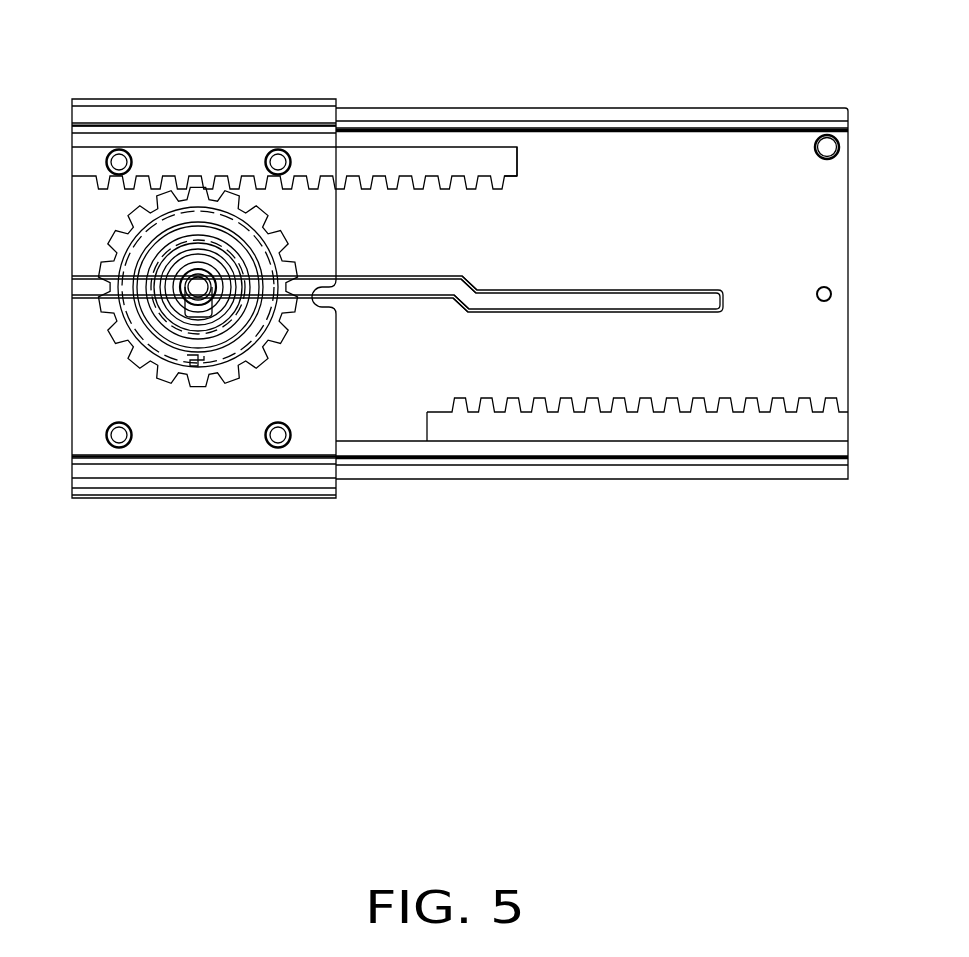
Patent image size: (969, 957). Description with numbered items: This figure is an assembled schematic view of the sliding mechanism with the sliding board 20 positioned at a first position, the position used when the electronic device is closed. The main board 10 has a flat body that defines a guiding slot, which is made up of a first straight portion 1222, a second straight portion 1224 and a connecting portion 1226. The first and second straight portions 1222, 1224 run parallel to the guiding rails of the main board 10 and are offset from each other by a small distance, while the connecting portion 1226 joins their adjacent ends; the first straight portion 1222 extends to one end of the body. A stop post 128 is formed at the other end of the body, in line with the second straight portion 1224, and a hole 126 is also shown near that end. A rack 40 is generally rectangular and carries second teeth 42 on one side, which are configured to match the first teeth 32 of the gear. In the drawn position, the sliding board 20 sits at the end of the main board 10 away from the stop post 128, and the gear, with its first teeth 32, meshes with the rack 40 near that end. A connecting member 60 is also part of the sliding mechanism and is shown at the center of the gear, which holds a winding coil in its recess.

The main board 10 is at (702, 154).
The sliding board 20 is at (208, 117).
The first teeth 32 is at (113, 238).
The rack 40 is at (388, 162).
The second teeth 42 is at (512, 181).
The connecting member 60 is at (180, 288).
The hole 126 is at (826, 134).
The stop post 128 is at (832, 295).
The first straight portion 1222 is at (375, 290).
The second straight portion 1224 is at (650, 300).
The connecting portion 1226 is at (466, 300).